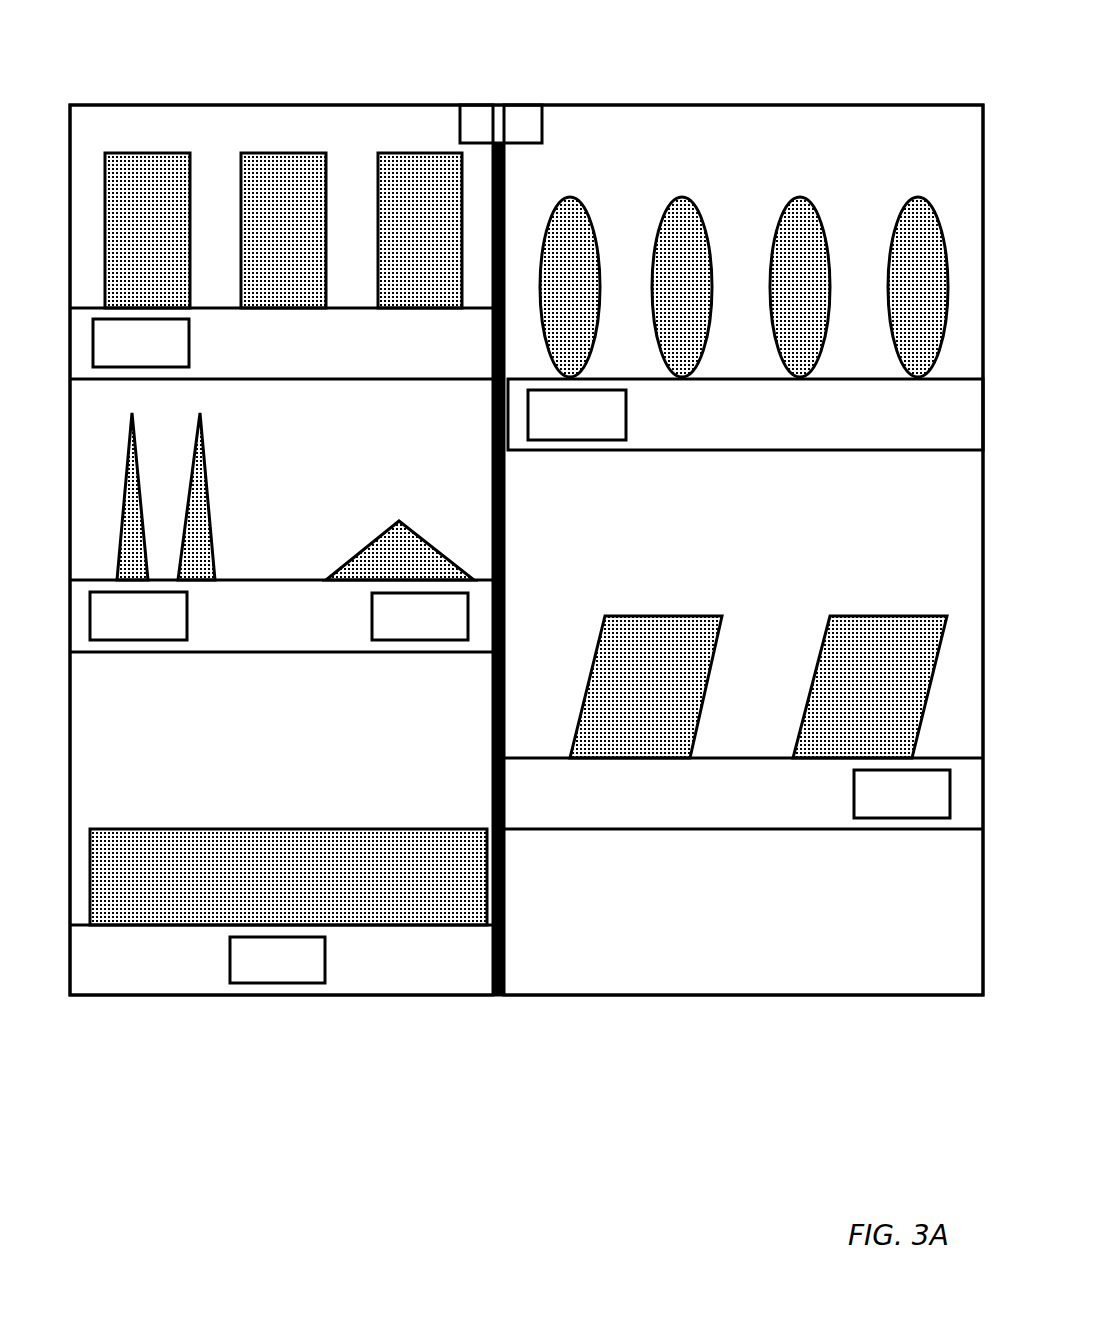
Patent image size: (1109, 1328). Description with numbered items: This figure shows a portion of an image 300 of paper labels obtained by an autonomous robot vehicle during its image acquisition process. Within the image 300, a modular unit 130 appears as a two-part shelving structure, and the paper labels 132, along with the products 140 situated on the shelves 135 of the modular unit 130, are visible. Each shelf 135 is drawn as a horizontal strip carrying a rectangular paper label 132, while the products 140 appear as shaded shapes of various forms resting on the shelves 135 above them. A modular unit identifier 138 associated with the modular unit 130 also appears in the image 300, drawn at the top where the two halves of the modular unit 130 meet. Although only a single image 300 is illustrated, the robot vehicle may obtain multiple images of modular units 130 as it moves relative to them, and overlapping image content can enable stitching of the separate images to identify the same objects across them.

The image 300 is at (353, 105).
The modular unit 130 is at (98, 970).
The modular unit identifier 138 is at (542, 107).
The shelves 135 is at (410, 368).
The paper labels 132 is at (190, 343).
The products 140 is at (800, 228).